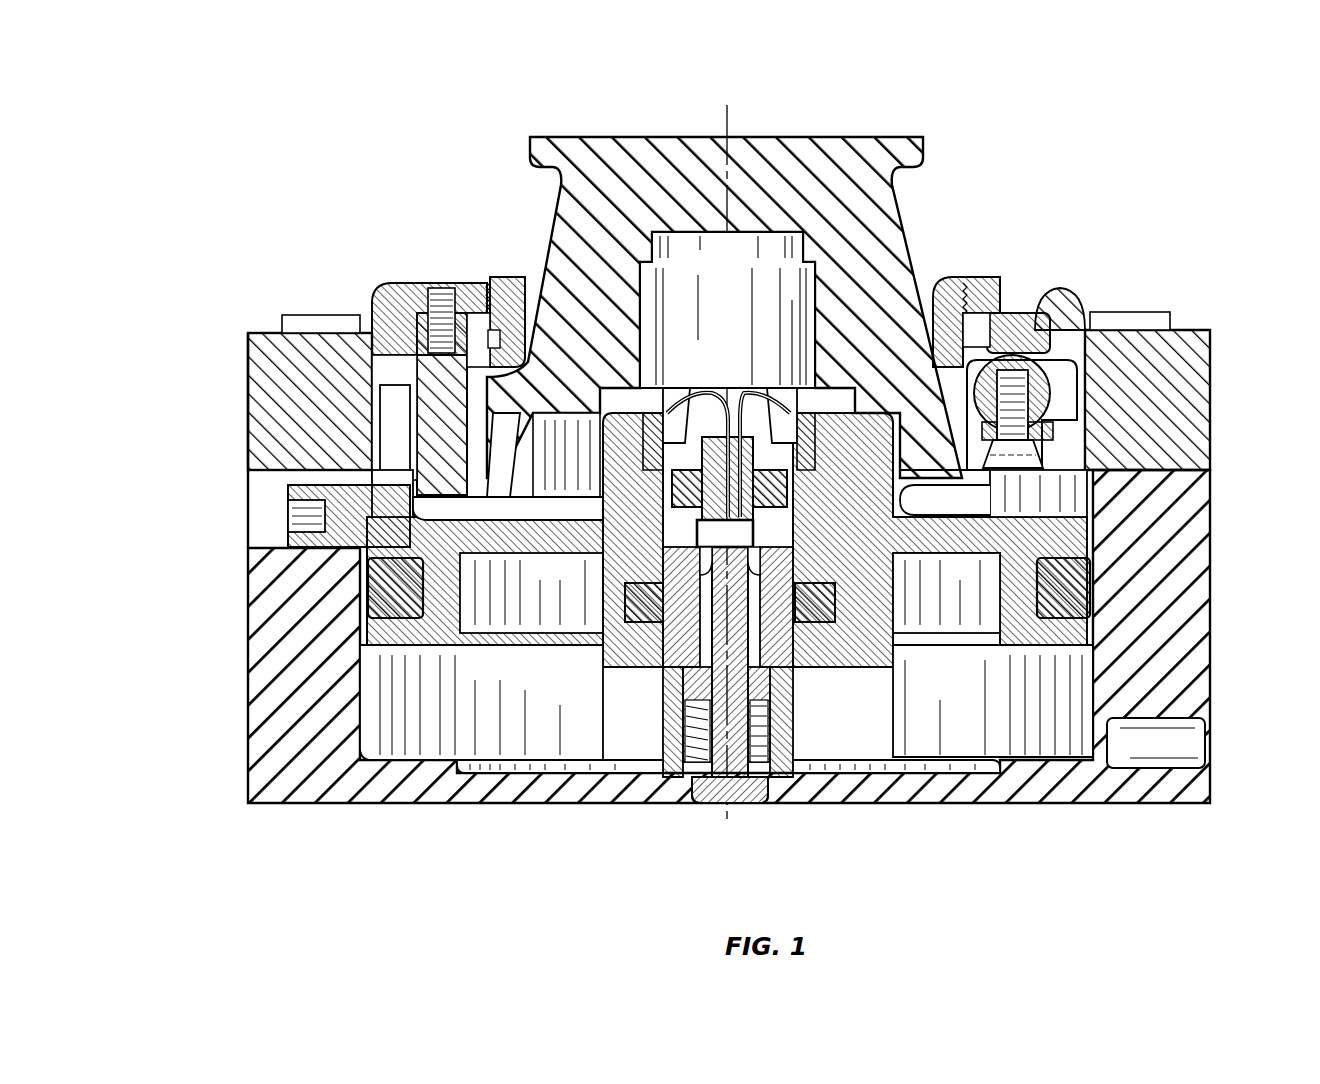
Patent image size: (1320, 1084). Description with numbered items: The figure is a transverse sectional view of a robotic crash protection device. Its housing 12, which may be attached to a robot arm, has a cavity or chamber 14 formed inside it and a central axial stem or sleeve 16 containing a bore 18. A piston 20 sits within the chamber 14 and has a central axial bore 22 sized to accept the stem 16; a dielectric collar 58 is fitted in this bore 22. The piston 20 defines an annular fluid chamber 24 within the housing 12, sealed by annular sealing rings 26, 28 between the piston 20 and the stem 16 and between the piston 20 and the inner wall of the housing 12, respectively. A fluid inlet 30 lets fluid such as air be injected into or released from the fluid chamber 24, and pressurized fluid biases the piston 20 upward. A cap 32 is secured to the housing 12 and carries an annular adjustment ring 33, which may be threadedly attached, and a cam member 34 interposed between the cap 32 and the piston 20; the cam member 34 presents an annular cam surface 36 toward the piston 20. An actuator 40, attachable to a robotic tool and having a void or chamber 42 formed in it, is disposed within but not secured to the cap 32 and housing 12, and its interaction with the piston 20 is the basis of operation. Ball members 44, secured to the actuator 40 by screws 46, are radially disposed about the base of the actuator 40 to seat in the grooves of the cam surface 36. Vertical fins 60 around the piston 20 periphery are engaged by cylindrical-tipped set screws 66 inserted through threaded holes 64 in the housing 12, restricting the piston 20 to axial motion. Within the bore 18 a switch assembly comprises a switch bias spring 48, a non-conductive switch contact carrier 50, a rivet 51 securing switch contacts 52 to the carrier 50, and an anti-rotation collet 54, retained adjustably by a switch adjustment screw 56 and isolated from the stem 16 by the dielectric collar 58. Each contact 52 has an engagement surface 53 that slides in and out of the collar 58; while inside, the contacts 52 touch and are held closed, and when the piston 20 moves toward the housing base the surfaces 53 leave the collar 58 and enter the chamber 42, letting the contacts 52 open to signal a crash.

The housing 12 is at (248, 592).
The cavity or chamber 14 is at (1062, 497).
The central axial stem or sleeve 16 is at (790, 700).
The bore 18 is at (690, 562).
The piston 20 is at (1010, 600).
The central axial bore 22 is at (648, 537).
The annular fluid chamber 24 is at (925, 724).
The annular sealing ring 26 is at (825, 590).
The annular sealing ring 28 is at (1055, 585).
The fluid inlet 30 is at (1185, 740).
The cap 32 is at (248, 432).
The annular adjustment ring 33 is at (492, 290).
The cam member 34 is at (560, 470).
The annular cam surface 36 is at (600, 487).
The actuator 40 is at (549, 230).
The void or chamber 42 is at (742, 312).
The ball members 44 is at (1045, 350).
The screws 46 is at (1012, 410).
The switch bias spring 48 is at (700, 722).
The non-conductive switch contact carrier 50 is at (700, 605).
The rivet 51 is at (800, 640).
The switch contacts 52 is at (745, 408).
The engagement surface 53 is at (950, 290).
The anti-rotation collet 54 is at (393, 403).
The switch adjustment screw 56 is at (720, 792).
The dielectric collar 58 is at (430, 320).
The vertical fins 60 is at (445, 385).
The threaded holes 64 is at (284, 508).
The cylindrical-tipped set screw 66 is at (288, 540).